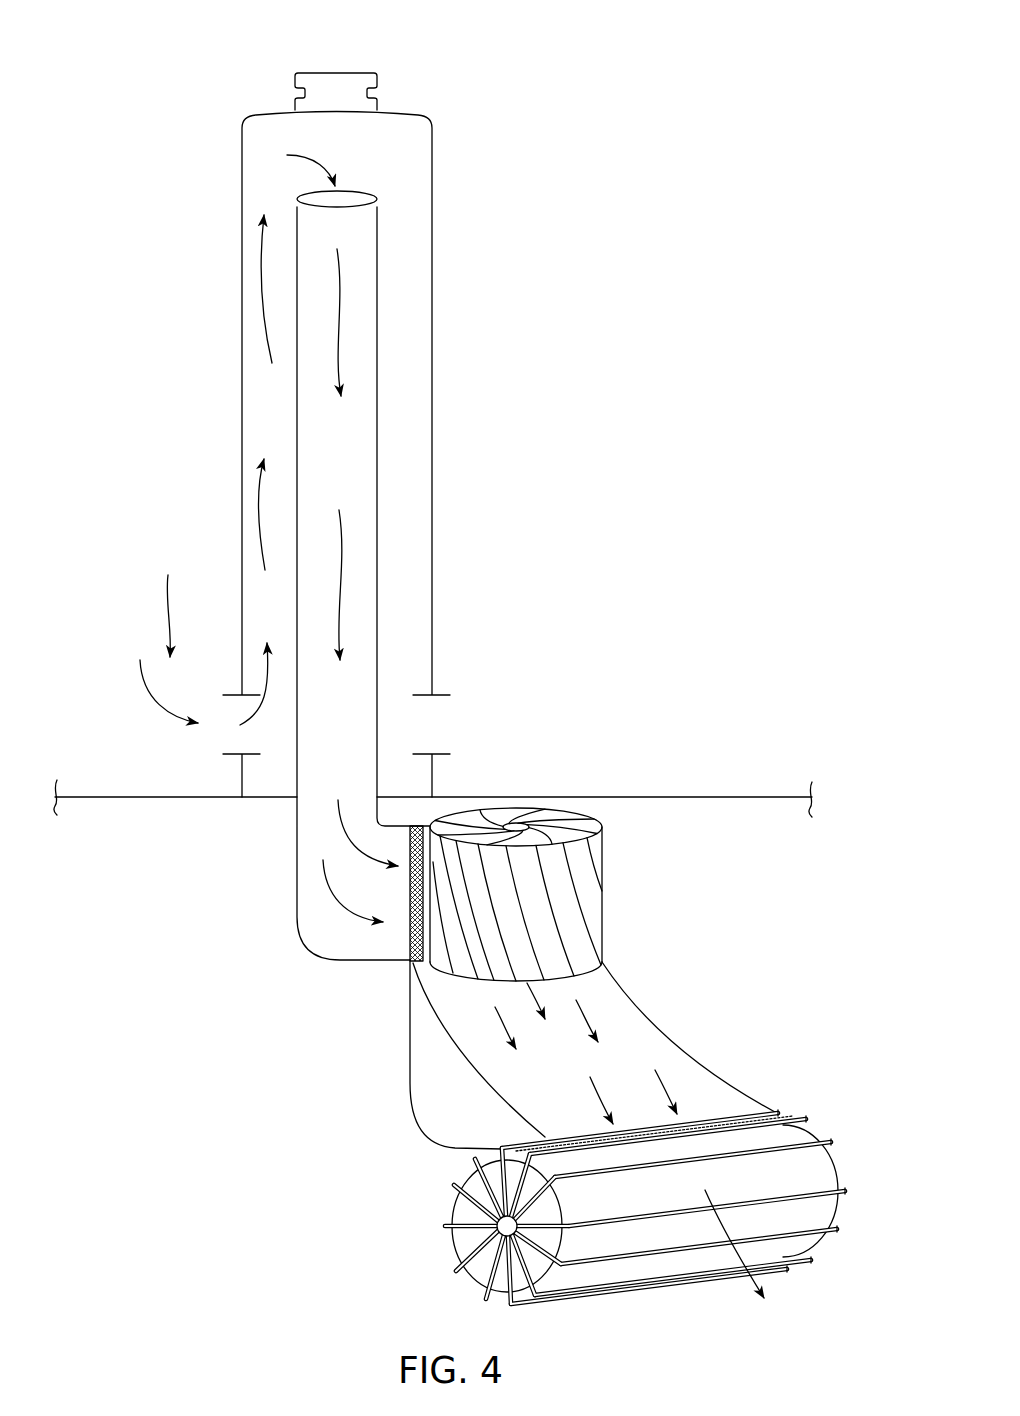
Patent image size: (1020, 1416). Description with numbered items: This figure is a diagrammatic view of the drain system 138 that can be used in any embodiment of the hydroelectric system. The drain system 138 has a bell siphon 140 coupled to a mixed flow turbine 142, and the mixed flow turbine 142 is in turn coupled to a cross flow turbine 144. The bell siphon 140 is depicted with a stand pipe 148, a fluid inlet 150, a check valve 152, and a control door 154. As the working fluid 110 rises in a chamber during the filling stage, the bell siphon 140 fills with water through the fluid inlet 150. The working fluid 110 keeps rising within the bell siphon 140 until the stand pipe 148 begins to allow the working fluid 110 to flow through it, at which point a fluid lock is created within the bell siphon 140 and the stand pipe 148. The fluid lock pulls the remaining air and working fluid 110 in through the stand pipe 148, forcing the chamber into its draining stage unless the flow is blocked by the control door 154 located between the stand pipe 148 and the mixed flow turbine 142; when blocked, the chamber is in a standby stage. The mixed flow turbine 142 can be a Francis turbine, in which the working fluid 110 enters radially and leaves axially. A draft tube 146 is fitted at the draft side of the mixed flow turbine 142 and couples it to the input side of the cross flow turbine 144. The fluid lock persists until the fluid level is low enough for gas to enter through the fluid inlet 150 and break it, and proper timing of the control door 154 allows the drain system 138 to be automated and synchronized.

The drain system 138 is at (134, 61).
The bell siphon 140 is at (241, 182).
The check valve 152 is at (335, 83).
The working fluid 110 is at (345, 553).
The stand pipe 148 is at (296, 413).
The fluid inlet 150 is at (198, 741).
The control door 154 is at (410, 882).
The mixed flow turbine 142 is at (585, 878).
The draft tube 146 is at (438, 1083).
The cross flow turbine 144 is at (793, 1143).